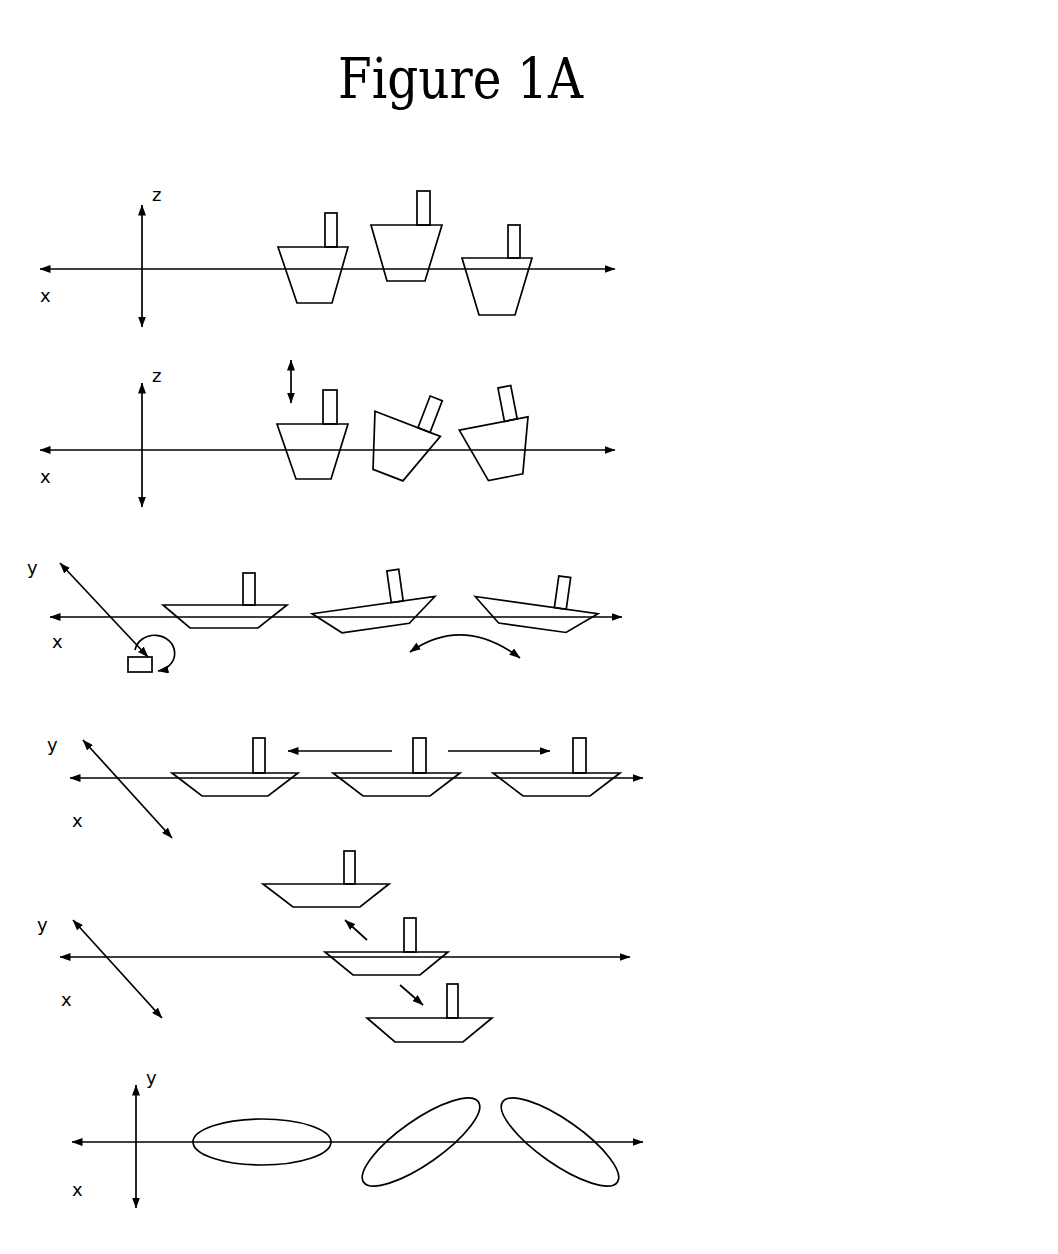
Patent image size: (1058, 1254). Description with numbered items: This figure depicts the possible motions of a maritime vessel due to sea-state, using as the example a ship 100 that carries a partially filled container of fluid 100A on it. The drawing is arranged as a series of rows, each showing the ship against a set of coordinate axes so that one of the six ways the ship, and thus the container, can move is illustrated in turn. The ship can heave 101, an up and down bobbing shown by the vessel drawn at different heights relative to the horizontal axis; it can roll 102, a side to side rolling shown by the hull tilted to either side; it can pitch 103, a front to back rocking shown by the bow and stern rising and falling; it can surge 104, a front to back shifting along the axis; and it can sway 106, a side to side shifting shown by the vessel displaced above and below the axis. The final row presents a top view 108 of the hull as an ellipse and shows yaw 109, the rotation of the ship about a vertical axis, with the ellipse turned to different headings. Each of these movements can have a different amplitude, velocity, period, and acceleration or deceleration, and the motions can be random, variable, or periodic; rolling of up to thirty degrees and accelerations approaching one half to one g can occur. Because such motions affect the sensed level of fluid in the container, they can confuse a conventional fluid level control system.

The ship 100 is at (278, 248).
The container of fluid 100A is at (430, 200).
The heave 101 is at (619, 270).
The roll 102 is at (522, 434).
The pitch 103 is at (529, 618).
The surge 104 is at (545, 766).
The sway 106 is at (502, 946).
The top view of ship 108 is at (307, 1187).
The yaw 109 is at (613, 1149).